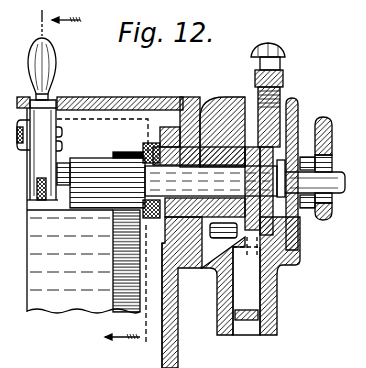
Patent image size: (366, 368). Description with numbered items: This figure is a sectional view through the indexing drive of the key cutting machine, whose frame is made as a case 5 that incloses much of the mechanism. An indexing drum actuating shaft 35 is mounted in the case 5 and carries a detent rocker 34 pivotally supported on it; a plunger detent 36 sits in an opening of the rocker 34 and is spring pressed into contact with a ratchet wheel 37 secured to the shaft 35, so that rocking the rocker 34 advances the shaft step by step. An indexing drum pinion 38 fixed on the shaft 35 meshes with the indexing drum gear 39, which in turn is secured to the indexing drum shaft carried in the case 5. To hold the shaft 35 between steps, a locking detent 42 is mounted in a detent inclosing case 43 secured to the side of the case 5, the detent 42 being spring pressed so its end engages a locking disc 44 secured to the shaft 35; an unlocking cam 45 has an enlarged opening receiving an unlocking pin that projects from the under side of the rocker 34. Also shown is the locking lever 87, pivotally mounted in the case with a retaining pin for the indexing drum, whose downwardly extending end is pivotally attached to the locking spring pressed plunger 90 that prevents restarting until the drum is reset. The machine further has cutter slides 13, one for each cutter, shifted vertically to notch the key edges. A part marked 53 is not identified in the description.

The case 5 is at (172, 350).
The cutter slides 13 is at (91, 185).
The detent rocker 34 is at (225, 100).
The indexing drum actuating shaft 35 is at (330, 176).
The plunger detent 36 is at (278, 110).
The ratchet wheel 37 is at (262, 222).
The indexing drum pinion 38 is at (88, 160).
The indexing drum gear 39 is at (113, 278).
The locking detent 42 is at (250, 289).
The detent inclosing case 43 is at (293, 263).
The locking disc 44 is at (235, 250).
The unlocking cam 45 is at (203, 292).
The screw head 53 is at (288, 48).
The locking lever 87 is at (43, 142).
The locking spring pressed plunger 90 is at (39, 119).